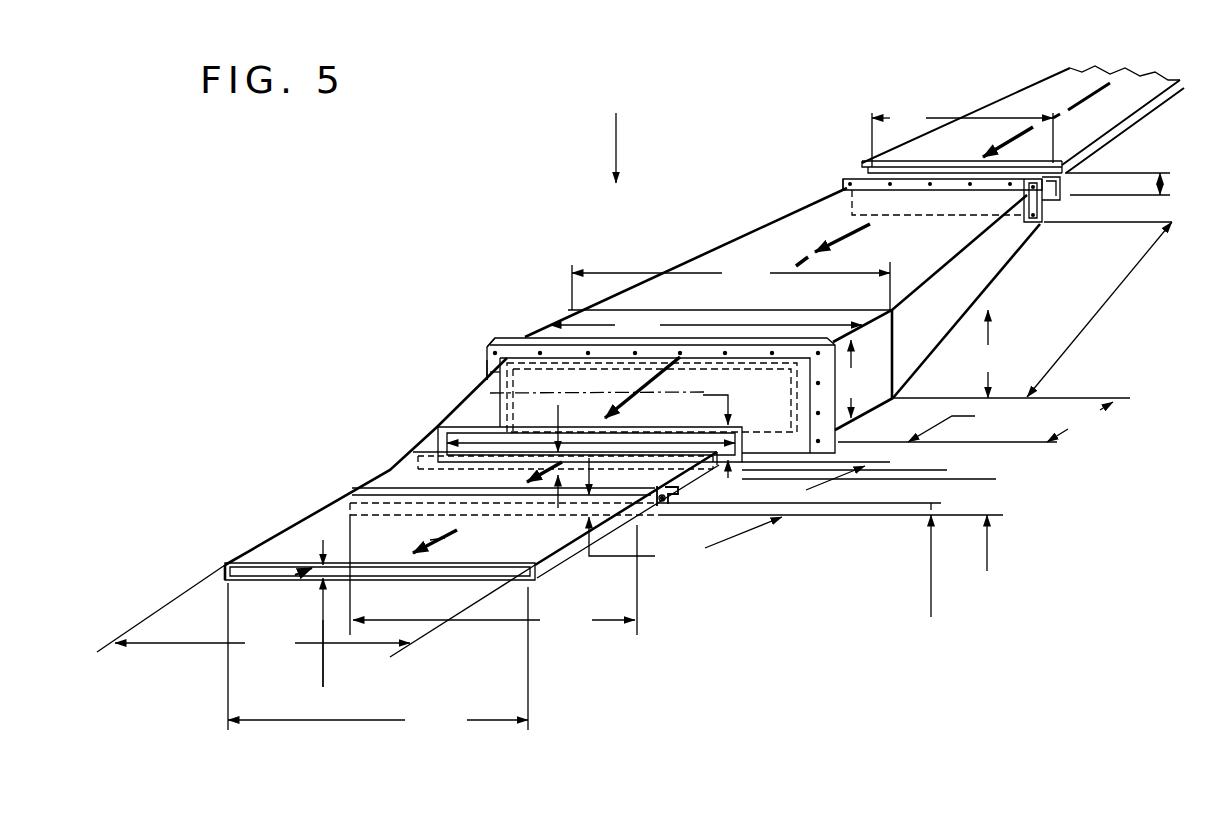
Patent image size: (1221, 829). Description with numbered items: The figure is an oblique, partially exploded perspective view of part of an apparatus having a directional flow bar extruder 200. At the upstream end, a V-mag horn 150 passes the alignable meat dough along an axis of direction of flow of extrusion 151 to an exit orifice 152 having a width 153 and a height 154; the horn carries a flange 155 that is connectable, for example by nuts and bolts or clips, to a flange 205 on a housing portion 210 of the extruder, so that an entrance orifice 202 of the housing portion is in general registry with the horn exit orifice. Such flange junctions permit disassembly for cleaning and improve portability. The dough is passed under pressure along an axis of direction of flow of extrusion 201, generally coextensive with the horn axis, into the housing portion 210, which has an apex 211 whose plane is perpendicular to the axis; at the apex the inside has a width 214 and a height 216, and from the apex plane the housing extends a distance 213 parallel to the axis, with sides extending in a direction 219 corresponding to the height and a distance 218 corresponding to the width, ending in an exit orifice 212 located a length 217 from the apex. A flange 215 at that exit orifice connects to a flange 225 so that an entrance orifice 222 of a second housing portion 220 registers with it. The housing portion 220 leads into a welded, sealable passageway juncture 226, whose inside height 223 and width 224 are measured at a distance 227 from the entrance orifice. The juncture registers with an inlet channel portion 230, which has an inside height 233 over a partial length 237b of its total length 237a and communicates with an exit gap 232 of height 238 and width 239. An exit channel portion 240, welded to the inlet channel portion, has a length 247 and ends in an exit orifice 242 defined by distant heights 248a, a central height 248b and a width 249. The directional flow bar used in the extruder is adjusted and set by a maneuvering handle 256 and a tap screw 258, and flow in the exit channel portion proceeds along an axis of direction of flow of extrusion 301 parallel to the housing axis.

The V-mag horn 150 is at (1028, 103).
The axis of direction of flow of extrusion 151 is at (1078, 95).
The exit orifice 152 is at (1062, 198).
The width 153 is at (962, 134).
The height 154 is at (1163, 190).
The flange 155 is at (858, 160).
The directional flow bar extruder 200 is at (616, 132).
The axis of direction of flow of extrusion 201 is at (833, 238).
The entrance orifice 202 is at (852, 192).
The flange 205 is at (845, 178).
The housing portion 210 is at (987, 250).
The apex 211 is at (570, 312).
The exit orifice 212 is at (533, 363).
The distance 213 is at (1099, 309).
The width 214 is at (731, 284).
The flange 215 is at (503, 337).
The height 216 is at (988, 354).
The length 217 is at (1080, 422).
The distance 218 is at (706, 323).
The direction 219 is at (858, 379).
The housing portion 220 is at (816, 485).
The entrance orifice 222 is at (483, 365).
The height 223 is at (695, 428).
The width 224 is at (445, 443).
The flange 225 is at (490, 375).
The sealable passageway juncture 226 is at (438, 430).
The distance 227 is at (962, 421).
The inlet channel portion 230 is at (395, 482).
The exit gap 232 is at (347, 508).
The inside height 233 is at (558, 405).
The length 237a is at (987, 571).
The partial length 237b is at (931, 617).
The height 238 is at (641, 515).
The width 239 is at (493, 575).
The exit channel portion 240 is at (225, 568).
The exit orifice 242 is at (305, 574).
The length 247 is at (743, 534).
The distant heights 248a is at (378, 659).
The central height 248b is at (323, 687).
The width 249 is at (262, 642).
The maneuvering handle 256 is at (672, 500).
The tap screw 258 is at (682, 498).
The axis of direction of flow of extrusion 301 is at (440, 535).